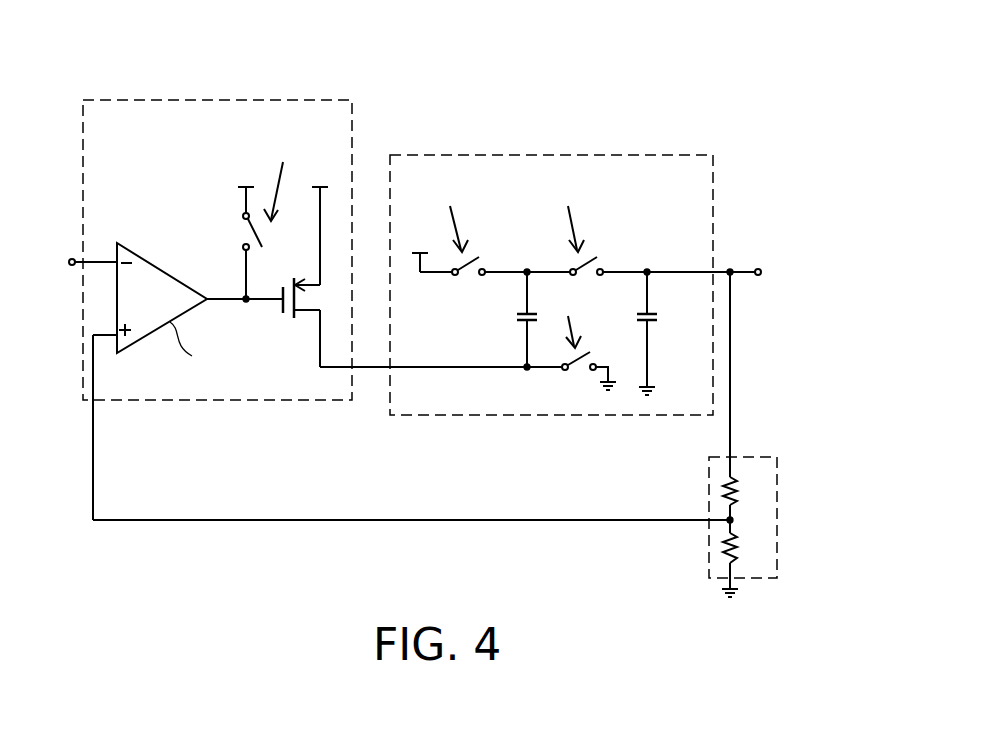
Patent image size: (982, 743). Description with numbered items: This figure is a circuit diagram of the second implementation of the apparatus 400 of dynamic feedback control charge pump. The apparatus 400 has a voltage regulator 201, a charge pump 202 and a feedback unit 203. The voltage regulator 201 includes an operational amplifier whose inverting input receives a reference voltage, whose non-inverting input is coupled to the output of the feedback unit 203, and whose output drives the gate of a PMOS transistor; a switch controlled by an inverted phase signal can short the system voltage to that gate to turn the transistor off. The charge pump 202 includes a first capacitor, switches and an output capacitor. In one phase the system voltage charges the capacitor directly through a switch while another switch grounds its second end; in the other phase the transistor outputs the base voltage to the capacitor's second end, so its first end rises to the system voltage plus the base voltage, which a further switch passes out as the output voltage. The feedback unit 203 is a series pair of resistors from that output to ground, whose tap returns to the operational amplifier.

The voltage regulator 201 is at (157, 99).
The charge pump 202 is at (473, 154).
The feedback unit 203 is at (708, 545).
The apparatus of dynamic feedback control charge pump 400 is at (853, 667).